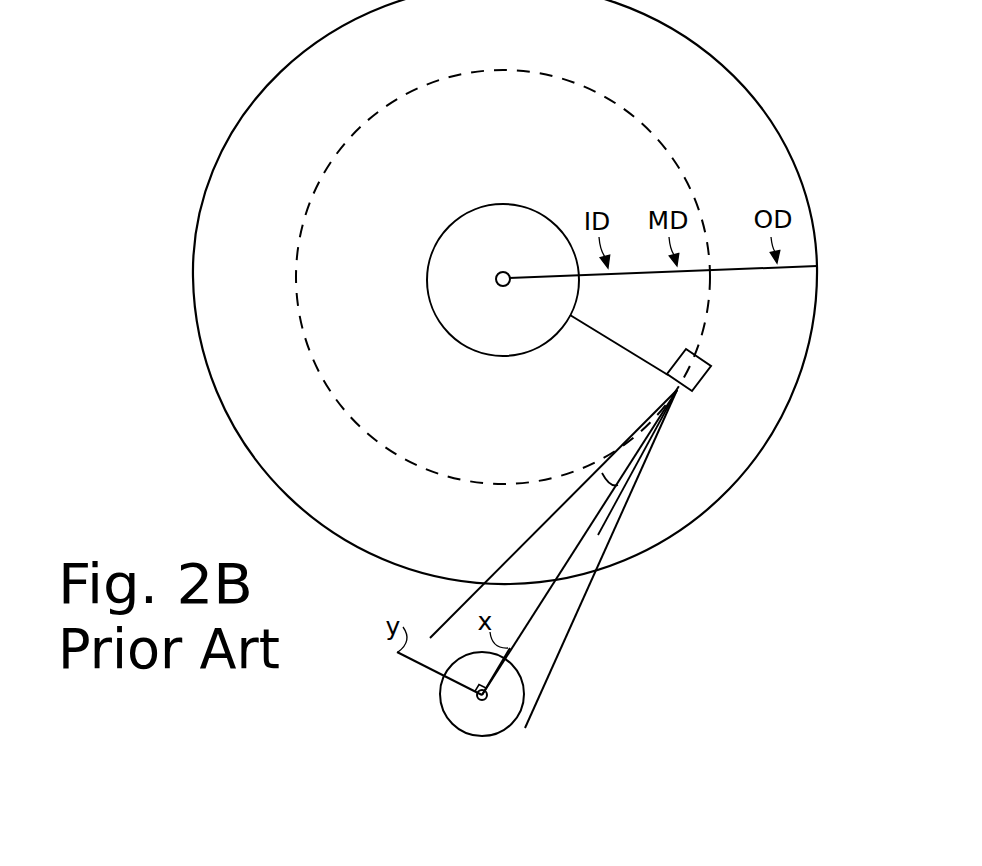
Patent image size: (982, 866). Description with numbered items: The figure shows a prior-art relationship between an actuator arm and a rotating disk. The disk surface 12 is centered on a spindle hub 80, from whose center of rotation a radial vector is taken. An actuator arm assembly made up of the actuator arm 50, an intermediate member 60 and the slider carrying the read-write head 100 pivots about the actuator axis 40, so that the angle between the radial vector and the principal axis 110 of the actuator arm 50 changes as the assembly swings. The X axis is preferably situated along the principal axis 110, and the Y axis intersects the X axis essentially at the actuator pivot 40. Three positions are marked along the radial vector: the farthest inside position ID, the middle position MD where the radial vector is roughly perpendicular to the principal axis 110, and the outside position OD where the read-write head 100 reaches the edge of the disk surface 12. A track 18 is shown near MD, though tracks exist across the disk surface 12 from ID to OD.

The disk surface 12 is at (195, 247).
The track 18 is at (675, 165).
The spindle hub 80 is at (502, 262).
The read-write head 100 is at (700, 378).
The actuator arm 50 is at (600, 546).
The actuator arm assembly member 60 is at (648, 450).
The principal axis 110 is at (527, 569).
The actuator axis 40 is at (442, 714).